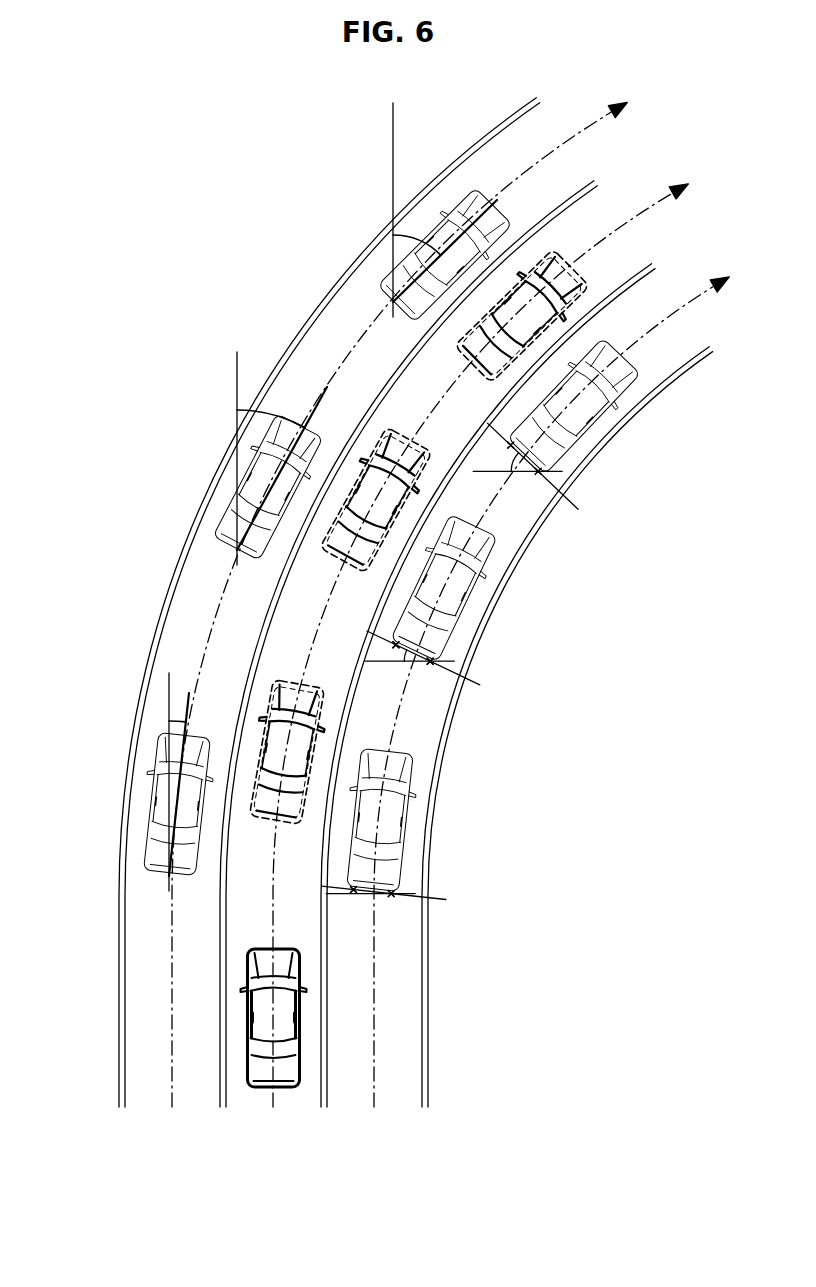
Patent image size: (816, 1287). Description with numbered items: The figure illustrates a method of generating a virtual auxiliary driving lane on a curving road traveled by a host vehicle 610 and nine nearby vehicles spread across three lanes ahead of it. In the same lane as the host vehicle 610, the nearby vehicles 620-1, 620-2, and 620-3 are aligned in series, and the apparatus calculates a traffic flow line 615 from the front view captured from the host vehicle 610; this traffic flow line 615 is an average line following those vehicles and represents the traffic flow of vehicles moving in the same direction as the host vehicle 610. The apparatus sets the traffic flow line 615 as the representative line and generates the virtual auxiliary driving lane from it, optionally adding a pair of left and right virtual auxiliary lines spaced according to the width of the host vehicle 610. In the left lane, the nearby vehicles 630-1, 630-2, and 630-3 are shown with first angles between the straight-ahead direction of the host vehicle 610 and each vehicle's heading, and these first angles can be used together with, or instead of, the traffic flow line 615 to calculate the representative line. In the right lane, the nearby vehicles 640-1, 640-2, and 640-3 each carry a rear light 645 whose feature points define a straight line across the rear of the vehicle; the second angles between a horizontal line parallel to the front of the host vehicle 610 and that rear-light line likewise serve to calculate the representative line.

The traffic flow line 615 is at (637, 218).
The host vehicle 610 is at (262, 1093).
The nearby vehicle 630-1 is at (155, 797).
The nearby vehicle 630-2 is at (228, 513).
The nearby vehicle 630-3 is at (382, 282).
The nearby vehicle 620-1 is at (272, 682).
The nearby vehicle 620-2 is at (386, 422).
The nearby vehicle 620-3 is at (580, 265).
The nearby vehicle 640-1 is at (393, 830).
The nearby vehicle 640-2 is at (465, 598).
The nearby vehicle 640-3 is at (580, 420).
The rear light 645 is at (399, 645).